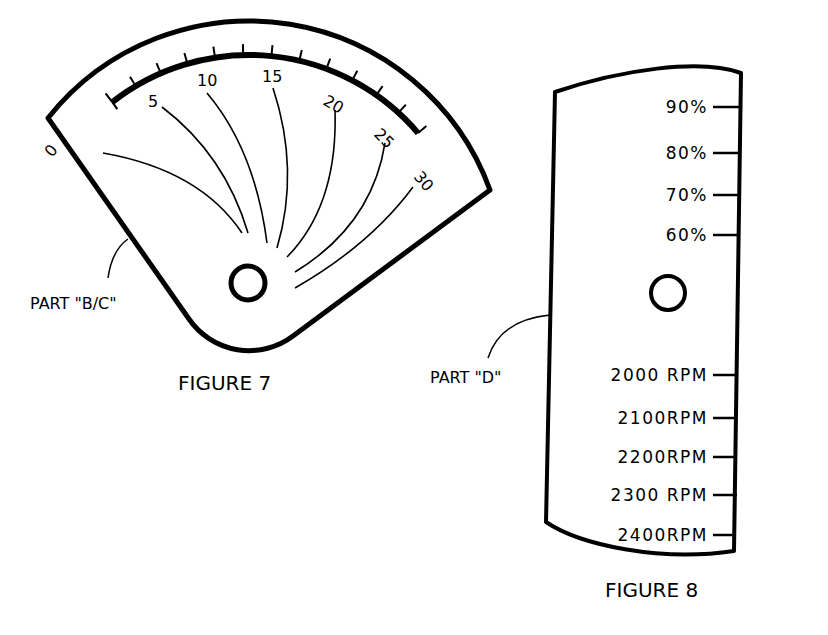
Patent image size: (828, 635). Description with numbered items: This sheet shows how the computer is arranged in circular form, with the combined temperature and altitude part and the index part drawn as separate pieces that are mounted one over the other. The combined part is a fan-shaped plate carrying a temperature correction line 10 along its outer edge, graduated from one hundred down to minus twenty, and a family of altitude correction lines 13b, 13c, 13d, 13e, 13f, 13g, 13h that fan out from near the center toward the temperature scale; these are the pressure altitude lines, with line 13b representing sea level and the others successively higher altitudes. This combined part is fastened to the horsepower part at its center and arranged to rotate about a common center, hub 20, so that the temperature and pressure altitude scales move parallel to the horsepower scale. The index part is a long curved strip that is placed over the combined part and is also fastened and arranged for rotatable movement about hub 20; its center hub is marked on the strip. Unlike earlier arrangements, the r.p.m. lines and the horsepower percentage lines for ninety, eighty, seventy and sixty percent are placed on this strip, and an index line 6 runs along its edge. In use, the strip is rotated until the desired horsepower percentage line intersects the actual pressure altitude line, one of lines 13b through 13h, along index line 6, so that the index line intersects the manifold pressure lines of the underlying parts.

In FIG. 7, the temperature correction line 10 is at (122, 104).
In FIG. 7, the altitude correction line 13b is at (133, 159).
In FIG. 7, the altitude correction line 13c is at (180, 118).
In FIG. 7, the altitude correction line 13d is at (211, 101).
In FIG. 7, the altitude correction line 13e is at (283, 120).
In FIG. 7, the altitude correction line 13f is at (331, 156).
In FIG. 7, the altitude correction line 13g is at (364, 198).
In FIG. 7, the altitude correction line 13h is at (385, 224).
In FIG. 7, the hub 20 is at (235, 299).
In FIG. 8, the hub 20 is at (651, 295).
In FIG. 8, the index line 6 is at (737, 437).